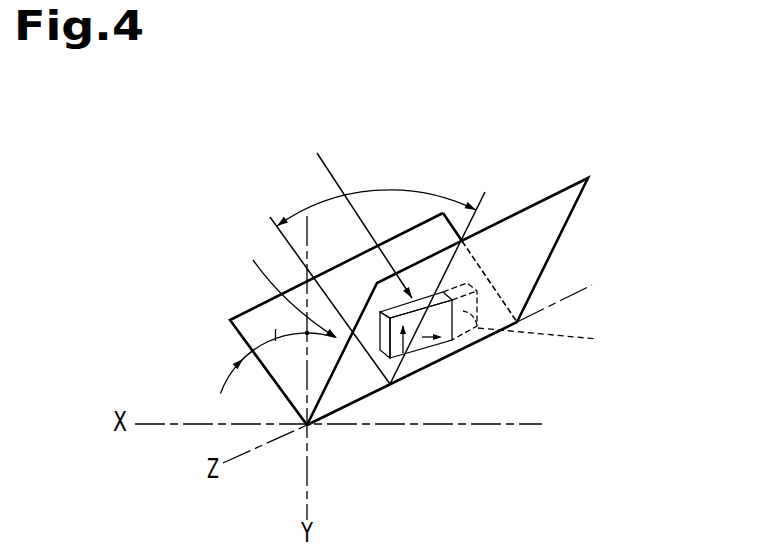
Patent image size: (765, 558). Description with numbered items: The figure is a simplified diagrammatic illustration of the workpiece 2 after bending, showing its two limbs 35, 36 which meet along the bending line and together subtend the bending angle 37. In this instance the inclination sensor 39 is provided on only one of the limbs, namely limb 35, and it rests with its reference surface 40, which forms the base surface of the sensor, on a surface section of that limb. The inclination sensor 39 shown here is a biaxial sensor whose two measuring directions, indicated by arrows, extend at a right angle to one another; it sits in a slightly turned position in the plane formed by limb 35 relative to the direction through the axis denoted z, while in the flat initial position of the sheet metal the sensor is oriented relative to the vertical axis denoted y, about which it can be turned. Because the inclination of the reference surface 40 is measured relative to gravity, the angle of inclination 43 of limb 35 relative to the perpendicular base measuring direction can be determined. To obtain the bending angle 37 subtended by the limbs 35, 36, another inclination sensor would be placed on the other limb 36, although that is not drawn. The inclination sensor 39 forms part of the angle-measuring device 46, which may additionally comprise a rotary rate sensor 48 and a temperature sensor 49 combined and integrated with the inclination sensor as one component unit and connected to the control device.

The workpiece 2 is at (417, 235).
The limb 35 is at (542, 221).
The limb 36 is at (263, 322).
The bending angle 37 is at (403, 193).
The inclination sensor 39 is at (436, 328).
The reference surface 40 is at (353, 210).
The angle of inclination 43 is at (275, 336).
The angle-measuring device 46 is at (430, 352).
The rotary rate sensor 48 is at (561, 363).
The temperature sensor 49 is at (556, 370).